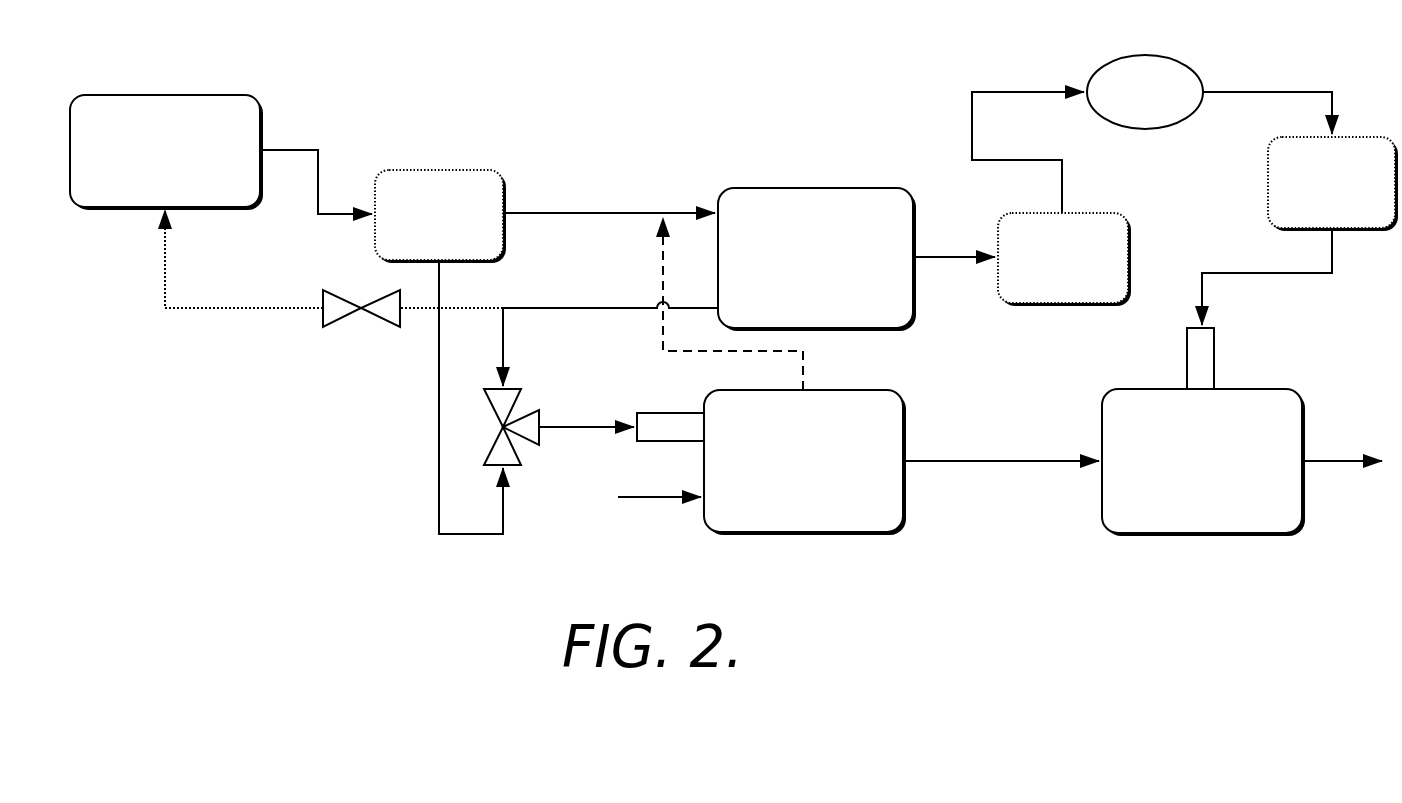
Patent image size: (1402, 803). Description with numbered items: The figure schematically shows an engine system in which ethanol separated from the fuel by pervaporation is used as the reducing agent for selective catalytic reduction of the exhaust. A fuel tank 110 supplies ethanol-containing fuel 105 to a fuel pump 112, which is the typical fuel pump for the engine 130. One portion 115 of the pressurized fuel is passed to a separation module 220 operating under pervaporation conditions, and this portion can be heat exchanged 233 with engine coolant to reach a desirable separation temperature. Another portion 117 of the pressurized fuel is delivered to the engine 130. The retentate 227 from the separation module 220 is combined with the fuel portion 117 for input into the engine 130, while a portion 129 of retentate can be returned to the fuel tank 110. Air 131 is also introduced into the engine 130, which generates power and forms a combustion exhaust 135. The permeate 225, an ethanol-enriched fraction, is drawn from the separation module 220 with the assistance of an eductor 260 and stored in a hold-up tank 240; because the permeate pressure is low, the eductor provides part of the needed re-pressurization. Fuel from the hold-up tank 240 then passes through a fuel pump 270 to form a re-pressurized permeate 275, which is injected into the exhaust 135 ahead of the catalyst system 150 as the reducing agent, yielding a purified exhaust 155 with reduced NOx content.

The fuel tank 110 is at (187, 165).
The ethanol-containing fuel 105 is at (293, 150).
The fuel pump 112 is at (461, 229).
The portion of pressurized fuel for separation 115 is at (582, 213).
The separation module 220 is at (837, 274).
The permeate 225 is at (950, 257).
The eductor 260 is at (1085, 272).
The hold-up tank 240 is at (1167, 55).
The fuel pump 270 is at (1354, 197).
The re-pressurized permeate 275 is at (1267, 273).
The portion of retentate returned to fuel tank 129 is at (223, 307).
The retentate 227 is at (548, 308).
The heat exchange 233 is at (803, 360).
The engine 130 is at (825, 475).
The air 131 is at (645, 497).
The portion of pressurized fuel delivered to engine 117 is at (438, 525).
The combustion exhaust 135 is at (990, 461).
The catalyst system 150 is at (1224, 475).
The purified exhaust 155 is at (1327, 461).